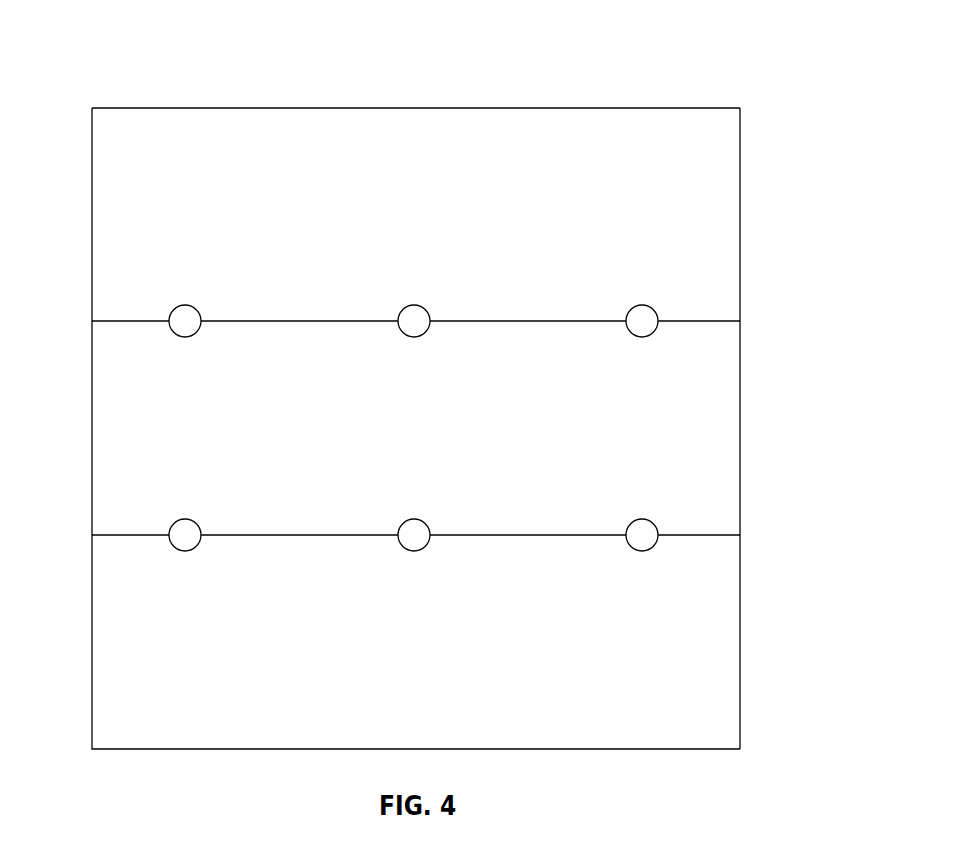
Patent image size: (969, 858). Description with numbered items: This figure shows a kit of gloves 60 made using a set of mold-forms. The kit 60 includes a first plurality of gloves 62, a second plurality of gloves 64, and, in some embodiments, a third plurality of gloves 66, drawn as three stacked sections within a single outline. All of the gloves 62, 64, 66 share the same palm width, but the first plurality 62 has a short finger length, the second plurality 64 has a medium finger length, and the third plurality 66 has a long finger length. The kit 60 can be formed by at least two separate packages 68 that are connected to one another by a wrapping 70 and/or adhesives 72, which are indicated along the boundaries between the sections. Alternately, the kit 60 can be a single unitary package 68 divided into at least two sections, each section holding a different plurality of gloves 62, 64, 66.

The kit of gloves 60 is at (415, 374).
The first plurality of gloves 62 is at (416, 214).
The second plurality of gloves 64 is at (416, 428).
The third plurality of gloves 66 is at (416, 642).
The package 68 is at (771, 428).
The wrapping 70 is at (416, 75).
The adhesive 72 is at (391, 400).